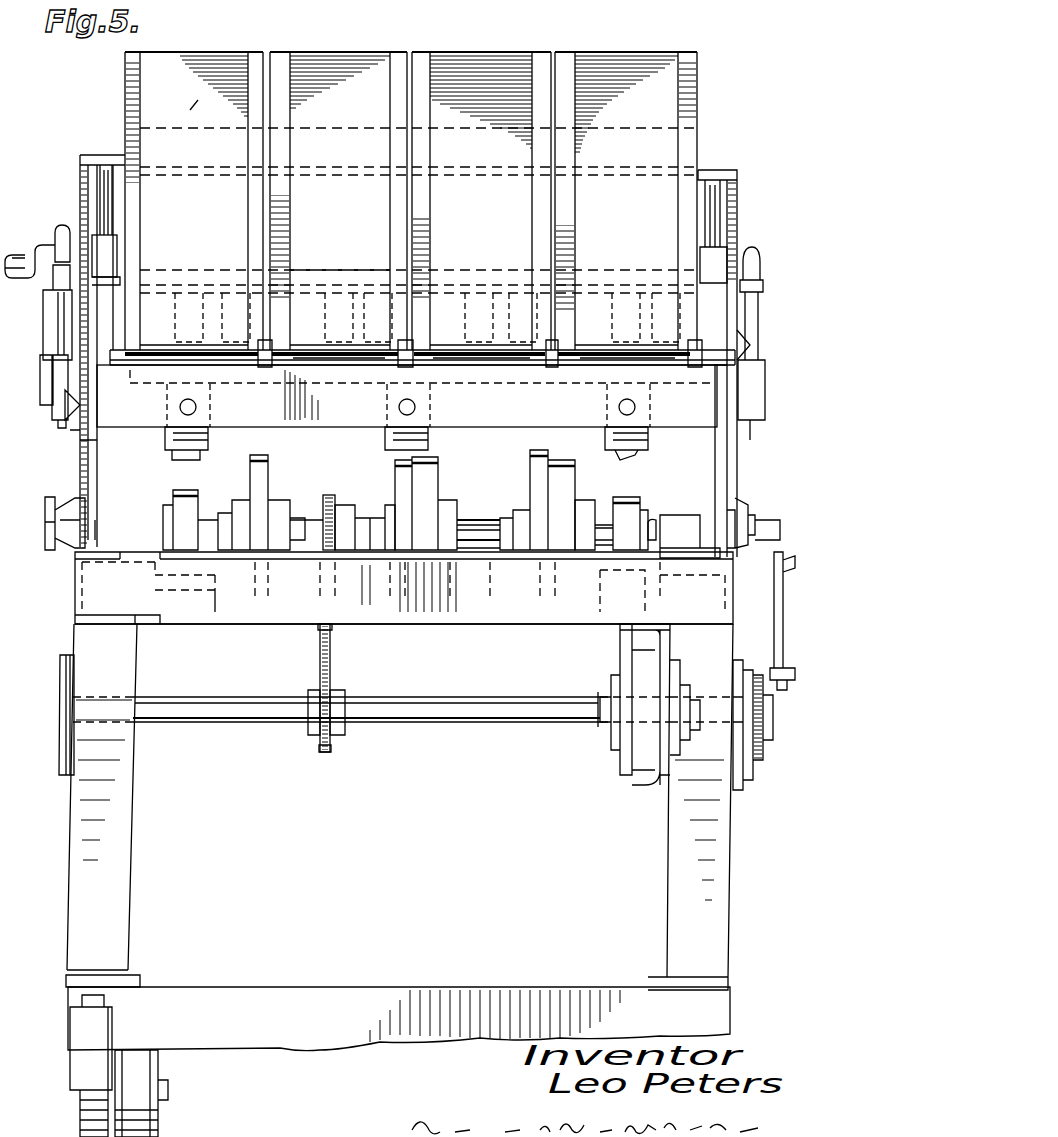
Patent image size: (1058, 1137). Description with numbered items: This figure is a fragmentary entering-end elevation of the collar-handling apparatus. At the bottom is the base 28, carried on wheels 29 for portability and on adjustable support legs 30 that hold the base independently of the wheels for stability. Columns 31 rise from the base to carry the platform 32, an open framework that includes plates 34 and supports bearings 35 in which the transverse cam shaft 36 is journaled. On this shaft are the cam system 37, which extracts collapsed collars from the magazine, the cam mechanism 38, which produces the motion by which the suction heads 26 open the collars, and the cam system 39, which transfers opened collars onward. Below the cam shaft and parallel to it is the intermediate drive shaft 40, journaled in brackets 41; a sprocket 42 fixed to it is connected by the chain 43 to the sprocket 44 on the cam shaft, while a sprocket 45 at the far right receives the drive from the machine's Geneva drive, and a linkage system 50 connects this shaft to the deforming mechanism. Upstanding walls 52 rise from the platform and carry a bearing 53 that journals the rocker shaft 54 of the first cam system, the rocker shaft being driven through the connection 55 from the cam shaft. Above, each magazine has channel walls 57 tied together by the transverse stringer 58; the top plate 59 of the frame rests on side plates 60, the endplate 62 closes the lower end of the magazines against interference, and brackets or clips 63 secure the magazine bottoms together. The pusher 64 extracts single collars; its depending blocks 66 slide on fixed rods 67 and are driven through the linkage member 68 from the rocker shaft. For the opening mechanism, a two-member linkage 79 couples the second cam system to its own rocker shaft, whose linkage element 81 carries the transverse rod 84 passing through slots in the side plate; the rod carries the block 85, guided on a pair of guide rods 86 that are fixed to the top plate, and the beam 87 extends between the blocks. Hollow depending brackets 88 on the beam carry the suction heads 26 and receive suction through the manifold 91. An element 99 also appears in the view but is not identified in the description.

The suction heads 26 is at (322, 356).
The base 28 is at (300, 1005).
The wheels 29 is at (158, 1118).
The support legs 30 is at (80, 1105).
The columns 31 is at (118, 900).
The platform 32 is at (245, 624).
The plates 34 is at (75, 612).
The bearings 35 is at (195, 500).
The shaft 36 is at (478, 530).
The cam system 37 is at (453, 482).
The cam mechanism 38 is at (310, 480).
The cam system 39 is at (600, 478).
The shaft 40 is at (232, 712).
The brackets 41 is at (66, 745).
The sprocket 42 is at (338, 735).
The chain 43 is at (330, 650).
The sprocket 44 is at (333, 505).
The sprocket 45 is at (757, 762).
The linkage system 50 is at (606, 667).
The upstanding walls 52 is at (85, 458).
The bearing 53 is at (55, 522).
The rocker shaft 54 is at (690, 525).
The connection 55 is at (395, 488).
The channel shaft walls 57 is at (140, 62).
The transverse stringer 58 is at (195, 128).
The top plate 59 is at (720, 170).
The side plates 60 is at (80, 176).
The endplate 62 is at (140, 428).
The brackets or clips 63 is at (548, 366).
The pusher 64 is at (586, 370).
The depending blocks 66 is at (220, 412).
The rods 67 is at (180, 407).
The linkage member 68 is at (208, 444).
The two-member linkage system 79 is at (258, 470).
The linkage element 81 is at (55, 320).
The transversely-extending rod 84 is at (745, 262).
The block 85 is at (105, 248).
The guide rods 86 is at (105, 215).
The beam 87 is at (316, 268).
The hollow depending brackets 88 is at (198, 322).
The manifold 91 is at (46, 262).
The cam 99 is at (540, 455).